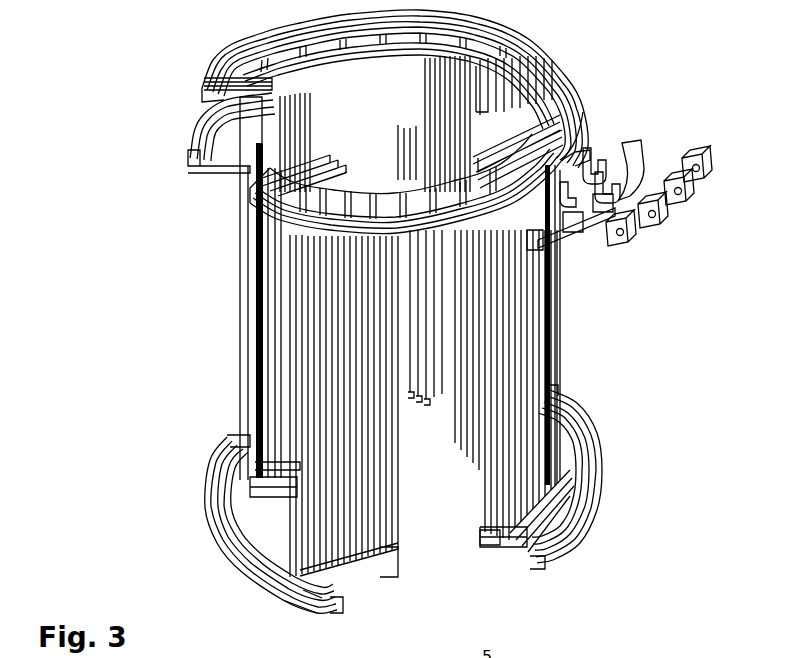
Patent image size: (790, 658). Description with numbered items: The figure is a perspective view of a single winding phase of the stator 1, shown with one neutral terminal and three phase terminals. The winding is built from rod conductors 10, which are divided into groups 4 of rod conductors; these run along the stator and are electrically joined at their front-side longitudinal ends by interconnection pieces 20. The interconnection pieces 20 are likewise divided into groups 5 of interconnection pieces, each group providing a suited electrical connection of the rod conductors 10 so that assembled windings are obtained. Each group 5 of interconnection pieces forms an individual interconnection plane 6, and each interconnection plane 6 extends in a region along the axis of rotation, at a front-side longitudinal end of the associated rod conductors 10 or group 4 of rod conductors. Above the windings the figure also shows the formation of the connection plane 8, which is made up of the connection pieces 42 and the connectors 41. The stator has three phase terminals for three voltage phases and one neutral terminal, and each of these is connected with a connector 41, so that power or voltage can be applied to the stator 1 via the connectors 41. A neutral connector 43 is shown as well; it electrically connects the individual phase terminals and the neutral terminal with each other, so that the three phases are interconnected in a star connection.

The stator 1 is at (100, 38).
The group of rod conductors 4 is at (312, 139).
The group of interconnection pieces 5 is at (253, 41).
The interconnection plane 6 is at (246, 583).
The connection plane 8 is at (592, 126).
The rod conductor 10 is at (278, 295).
The interconnection piece 20 is at (205, 160).
The connector 41 is at (700, 154).
The connection piece 42 is at (578, 88).
The neutral connector 43 is at (562, 238).